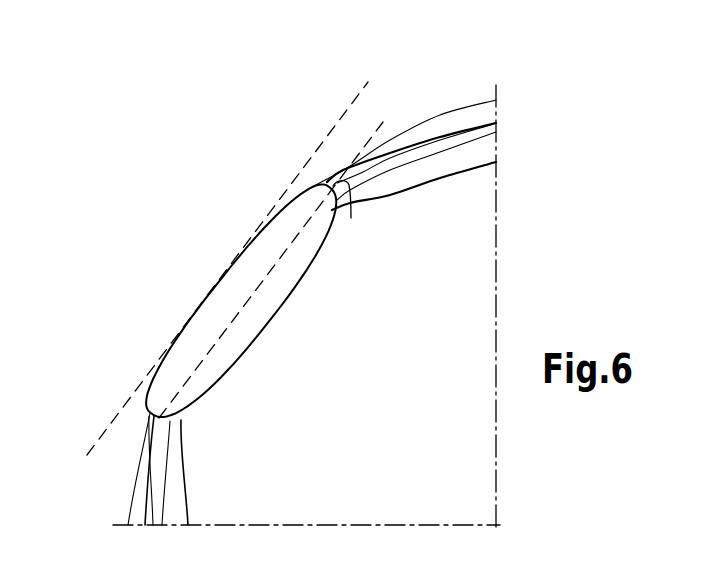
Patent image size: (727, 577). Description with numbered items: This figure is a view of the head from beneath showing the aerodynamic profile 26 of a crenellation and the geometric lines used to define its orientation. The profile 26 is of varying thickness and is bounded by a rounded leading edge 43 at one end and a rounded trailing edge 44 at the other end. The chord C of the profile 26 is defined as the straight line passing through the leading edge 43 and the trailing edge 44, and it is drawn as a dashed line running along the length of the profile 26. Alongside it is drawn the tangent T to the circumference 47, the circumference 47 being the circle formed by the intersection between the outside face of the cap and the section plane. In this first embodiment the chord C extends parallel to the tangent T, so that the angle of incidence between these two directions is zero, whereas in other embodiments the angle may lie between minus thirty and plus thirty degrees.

The profile 26 is at (219, 272).
The leading edge 43 is at (156, 424).
The trailing edge 44 is at (351, 218).
The circumference 47 is at (480, 101).
The tangent T is at (356, 102).
The chord C is at (388, 115).